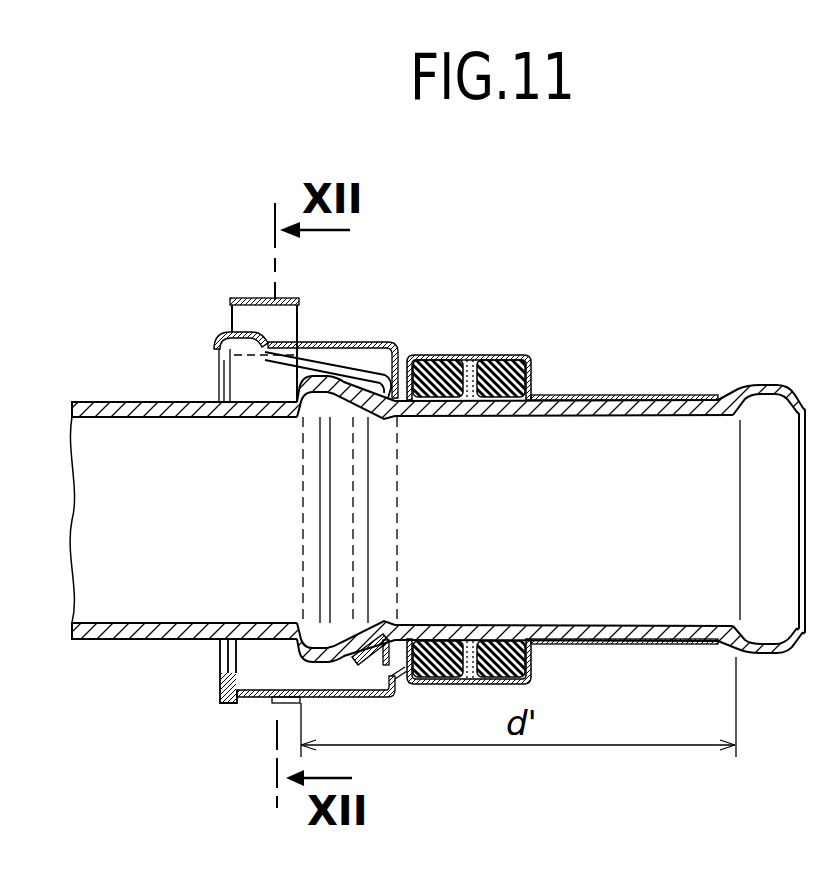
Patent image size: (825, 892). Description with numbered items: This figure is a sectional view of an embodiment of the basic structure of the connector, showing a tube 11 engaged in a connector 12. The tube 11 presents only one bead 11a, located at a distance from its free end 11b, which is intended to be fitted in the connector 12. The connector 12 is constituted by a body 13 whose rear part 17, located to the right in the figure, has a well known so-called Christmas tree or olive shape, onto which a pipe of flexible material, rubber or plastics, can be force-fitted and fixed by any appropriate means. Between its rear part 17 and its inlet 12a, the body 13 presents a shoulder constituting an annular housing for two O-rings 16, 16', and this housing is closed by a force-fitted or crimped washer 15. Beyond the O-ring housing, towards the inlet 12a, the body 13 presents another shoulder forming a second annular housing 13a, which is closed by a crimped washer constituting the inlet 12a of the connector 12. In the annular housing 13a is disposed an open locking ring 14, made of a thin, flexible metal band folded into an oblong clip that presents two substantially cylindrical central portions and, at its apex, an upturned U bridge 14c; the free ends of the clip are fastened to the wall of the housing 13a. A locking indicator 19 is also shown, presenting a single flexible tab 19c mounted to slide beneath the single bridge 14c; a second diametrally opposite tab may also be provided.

The tube 11 is at (110, 402).
The bead 11a is at (290, 407).
The free end 11b is at (718, 400).
The connector 12 is at (406, 334).
The inlet 12a is at (214, 370).
The body 13 is at (343, 706).
The second annular housing 13a is at (335, 352).
The open locking ring 14 is at (257, 384).
The upturned U bridge 14c is at (281, 299).
The washer 15 is at (384, 400).
The O-ring 16 is at (448, 495).
The O-ring 16' is at (513, 495).
The rear part 17 is at (620, 397).
The locking indicator 19 is at (380, 640).
The flexible tab 19c is at (360, 358).